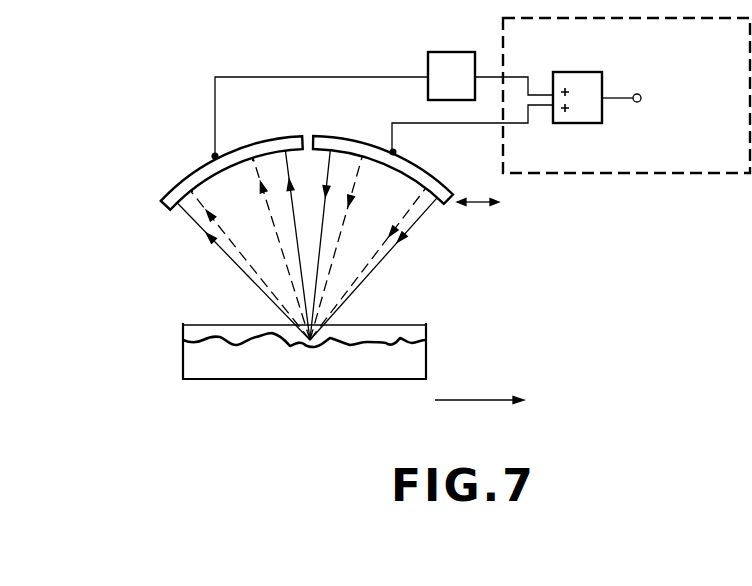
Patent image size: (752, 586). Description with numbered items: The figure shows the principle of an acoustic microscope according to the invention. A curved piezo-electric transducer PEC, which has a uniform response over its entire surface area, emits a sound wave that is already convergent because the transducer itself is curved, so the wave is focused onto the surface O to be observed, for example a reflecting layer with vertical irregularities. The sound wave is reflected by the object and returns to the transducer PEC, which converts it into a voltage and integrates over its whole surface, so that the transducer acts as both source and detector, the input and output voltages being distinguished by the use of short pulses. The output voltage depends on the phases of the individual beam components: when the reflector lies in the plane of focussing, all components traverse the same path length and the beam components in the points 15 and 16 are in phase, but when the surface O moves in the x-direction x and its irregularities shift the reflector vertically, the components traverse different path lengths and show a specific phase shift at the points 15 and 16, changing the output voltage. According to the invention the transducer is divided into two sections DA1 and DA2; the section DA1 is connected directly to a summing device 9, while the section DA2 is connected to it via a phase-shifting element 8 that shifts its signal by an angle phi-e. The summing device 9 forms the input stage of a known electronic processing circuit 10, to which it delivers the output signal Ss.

The phase-shifting element 8 is at (454, 50).
The summing device 9 is at (582, 125).
The electronic processing circuit 10 is at (665, 174).
The point 15 is at (253, 162).
The point 16 is at (192, 191).
The transducer section DA1 is at (422, 175).
The transducer section DA2 is at (177, 190).
The surface to be observed O is at (397, 330).
The piezo-electric transducer PEC is at (551, 214).
The output signal Ss is at (638, 102).
The x-direction x is at (488, 400).